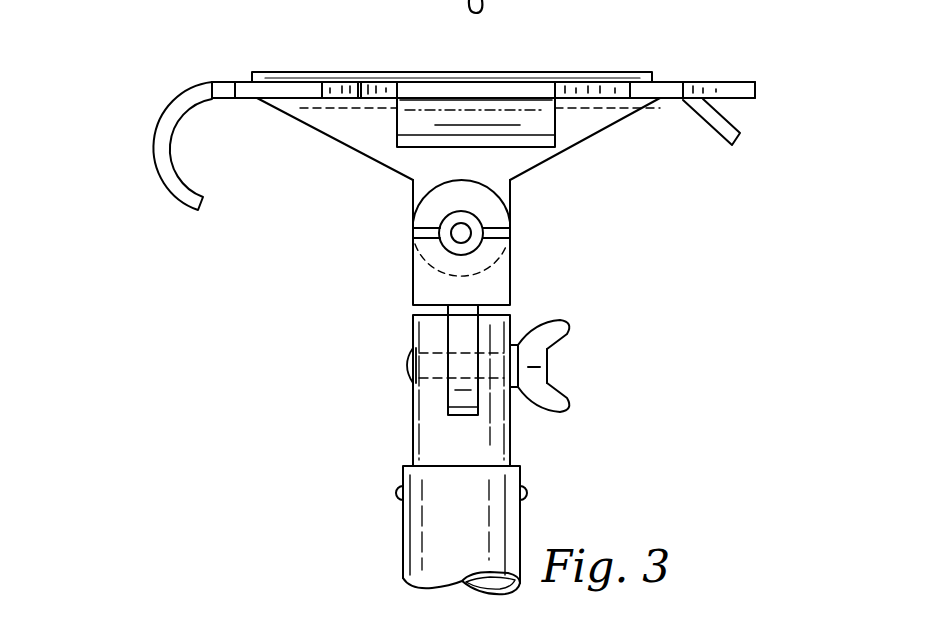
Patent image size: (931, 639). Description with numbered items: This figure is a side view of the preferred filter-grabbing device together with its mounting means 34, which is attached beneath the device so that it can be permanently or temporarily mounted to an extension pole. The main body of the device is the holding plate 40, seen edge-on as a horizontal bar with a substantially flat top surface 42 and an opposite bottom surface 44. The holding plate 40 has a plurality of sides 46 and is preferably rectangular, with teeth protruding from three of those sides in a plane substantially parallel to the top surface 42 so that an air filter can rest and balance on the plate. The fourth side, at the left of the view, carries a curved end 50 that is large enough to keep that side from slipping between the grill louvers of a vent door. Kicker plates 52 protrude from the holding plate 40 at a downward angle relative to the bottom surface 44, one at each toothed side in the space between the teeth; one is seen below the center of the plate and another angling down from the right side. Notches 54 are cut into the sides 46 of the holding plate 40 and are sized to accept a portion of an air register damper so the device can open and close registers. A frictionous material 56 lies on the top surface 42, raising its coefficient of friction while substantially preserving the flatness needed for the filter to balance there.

The mounting means 34 is at (332, 370).
The holding plate 40 is at (249, 97).
The top surface 42 is at (678, 72).
The bottom surface 44 is at (674, 112).
The sides 46 is at (138, 93).
The curved end 50 is at (155, 145).
The kicker plates 52 is at (550, 123).
The notches 54 is at (226, 82).
The frictionous material 56 is at (455, 72).